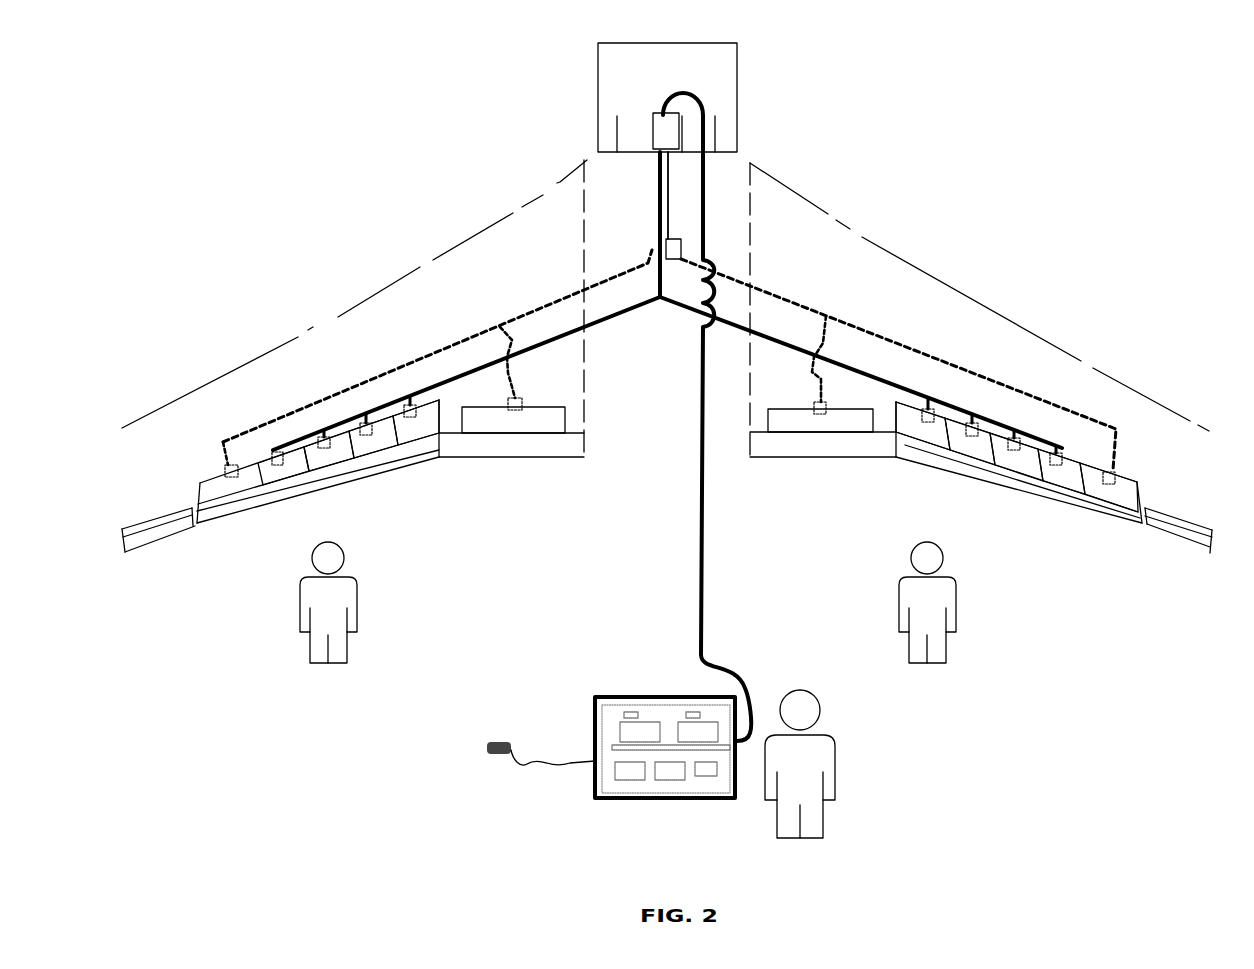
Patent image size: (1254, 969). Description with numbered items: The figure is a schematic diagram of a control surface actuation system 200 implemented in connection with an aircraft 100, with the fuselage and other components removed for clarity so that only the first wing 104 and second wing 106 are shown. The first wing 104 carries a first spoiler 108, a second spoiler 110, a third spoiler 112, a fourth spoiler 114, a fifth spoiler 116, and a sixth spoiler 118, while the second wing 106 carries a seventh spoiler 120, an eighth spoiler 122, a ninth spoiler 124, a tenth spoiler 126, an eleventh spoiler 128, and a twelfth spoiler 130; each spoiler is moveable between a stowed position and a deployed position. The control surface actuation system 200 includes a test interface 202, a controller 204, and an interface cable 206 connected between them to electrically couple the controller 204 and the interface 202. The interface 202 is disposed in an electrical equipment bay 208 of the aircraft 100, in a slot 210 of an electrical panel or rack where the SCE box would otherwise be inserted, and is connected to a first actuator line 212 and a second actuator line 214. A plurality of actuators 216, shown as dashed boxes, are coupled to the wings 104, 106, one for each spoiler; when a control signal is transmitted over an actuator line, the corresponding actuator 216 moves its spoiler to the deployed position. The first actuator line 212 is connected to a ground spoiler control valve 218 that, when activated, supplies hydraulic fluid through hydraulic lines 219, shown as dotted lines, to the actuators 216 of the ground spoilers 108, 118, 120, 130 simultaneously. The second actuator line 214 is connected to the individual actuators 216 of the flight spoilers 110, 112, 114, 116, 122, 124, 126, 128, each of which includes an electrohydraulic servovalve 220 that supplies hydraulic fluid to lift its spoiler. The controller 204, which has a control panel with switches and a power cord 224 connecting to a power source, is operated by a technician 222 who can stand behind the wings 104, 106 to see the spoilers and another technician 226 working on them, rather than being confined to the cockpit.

The aircraft 100 is at (313, 74).
The control surface actuation system 200 is at (556, 129).
The first wing 104 is at (395, 338).
The second wing 106 is at (905, 322).
The first spoiler 108 is at (222, 488).
The second spoiler 110 is at (286, 492).
The third spoiler 112 is at (327, 455).
The fourth spoiler 114 is at (370, 442).
The fifth spoiler 116 is at (413, 425).
The sixth spoiler 118 is at (510, 422).
The seventh spoiler 120 is at (809, 422).
The eighth spoiler 122 is at (919, 429).
The ninth spoiler 124 is at (959, 445).
The tenth spoiler 126 is at (1005, 459).
The eleventh spoiler 128 is at (1048, 473).
The twelfth spoiler 130 is at (1103, 488).
The test interface 202 is at (660, 113).
The controller 204 is at (595, 698).
The interface cable 206 is at (702, 497).
The electrical equipment (EE) bay 208 is at (598, 85).
The slot 210 is at (652, 160).
The first actuator line 212 is at (668, 193).
The second actuator line 214 is at (660, 227).
The actuator 216 is at (272, 458).
The ground spoiler control valve 218 is at (681, 243).
The hydraulic lines 219 is at (343, 392).
The electrohydraulic servovalve 220 is at (273, 455).
The technician 222 is at (832, 733).
The power cord 224 is at (523, 768).
The other technician 226 is at (357, 587).